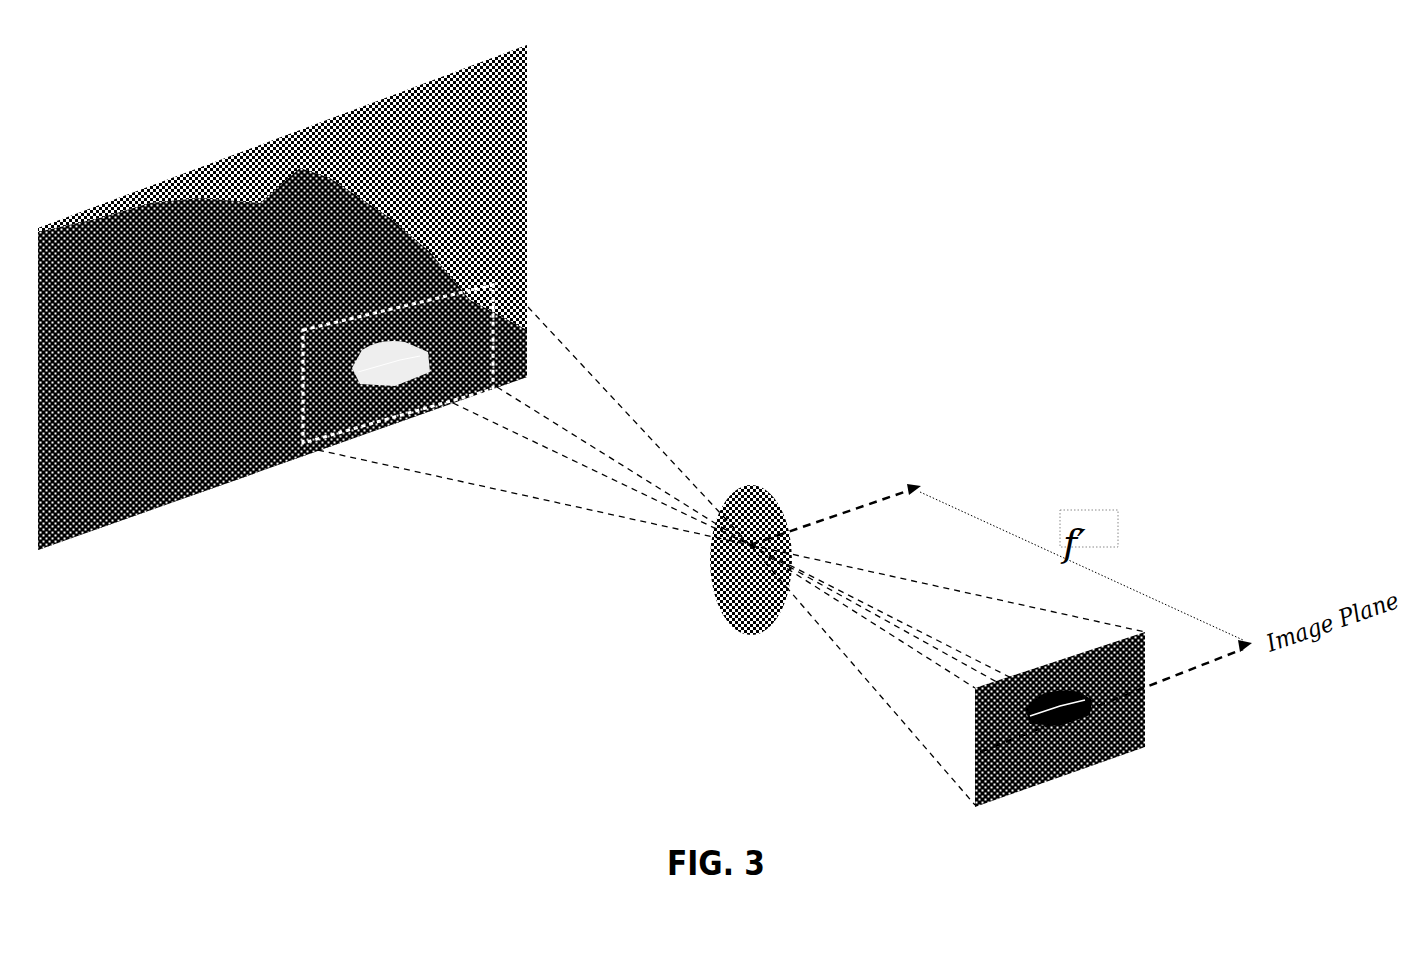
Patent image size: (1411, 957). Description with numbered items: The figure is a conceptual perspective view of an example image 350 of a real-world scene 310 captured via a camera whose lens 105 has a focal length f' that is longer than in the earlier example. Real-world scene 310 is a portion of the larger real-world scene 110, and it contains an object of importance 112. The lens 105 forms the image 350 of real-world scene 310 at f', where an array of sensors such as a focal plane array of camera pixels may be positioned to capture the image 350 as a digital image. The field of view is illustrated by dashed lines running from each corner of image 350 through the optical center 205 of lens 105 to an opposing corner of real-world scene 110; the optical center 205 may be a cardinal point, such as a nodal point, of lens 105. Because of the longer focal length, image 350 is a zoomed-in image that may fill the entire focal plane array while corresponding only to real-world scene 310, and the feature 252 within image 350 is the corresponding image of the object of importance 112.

The real-world scene 110 is at (318, 124).
The object of importance 112 is at (385, 378).
The real-world scene 310 is at (427, 288).
The lens 105 is at (723, 610).
The optical center 205 is at (750, 545).
The image 350 is at (1068, 775).
The feature 252 is at (1000, 725).